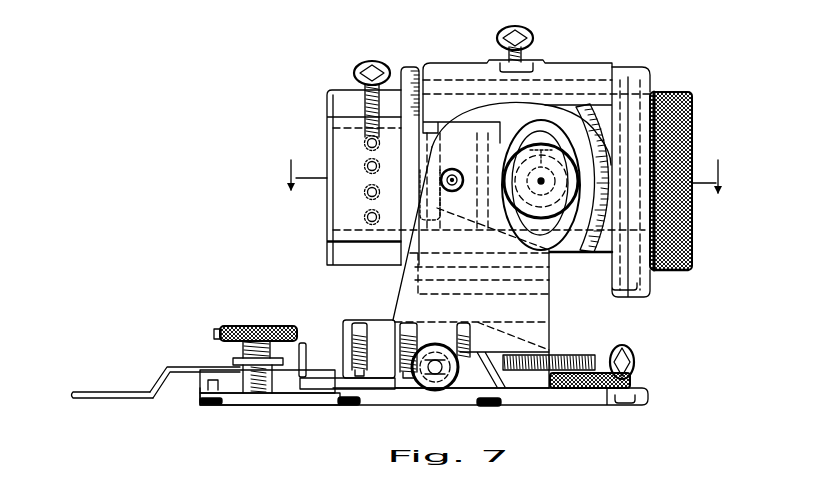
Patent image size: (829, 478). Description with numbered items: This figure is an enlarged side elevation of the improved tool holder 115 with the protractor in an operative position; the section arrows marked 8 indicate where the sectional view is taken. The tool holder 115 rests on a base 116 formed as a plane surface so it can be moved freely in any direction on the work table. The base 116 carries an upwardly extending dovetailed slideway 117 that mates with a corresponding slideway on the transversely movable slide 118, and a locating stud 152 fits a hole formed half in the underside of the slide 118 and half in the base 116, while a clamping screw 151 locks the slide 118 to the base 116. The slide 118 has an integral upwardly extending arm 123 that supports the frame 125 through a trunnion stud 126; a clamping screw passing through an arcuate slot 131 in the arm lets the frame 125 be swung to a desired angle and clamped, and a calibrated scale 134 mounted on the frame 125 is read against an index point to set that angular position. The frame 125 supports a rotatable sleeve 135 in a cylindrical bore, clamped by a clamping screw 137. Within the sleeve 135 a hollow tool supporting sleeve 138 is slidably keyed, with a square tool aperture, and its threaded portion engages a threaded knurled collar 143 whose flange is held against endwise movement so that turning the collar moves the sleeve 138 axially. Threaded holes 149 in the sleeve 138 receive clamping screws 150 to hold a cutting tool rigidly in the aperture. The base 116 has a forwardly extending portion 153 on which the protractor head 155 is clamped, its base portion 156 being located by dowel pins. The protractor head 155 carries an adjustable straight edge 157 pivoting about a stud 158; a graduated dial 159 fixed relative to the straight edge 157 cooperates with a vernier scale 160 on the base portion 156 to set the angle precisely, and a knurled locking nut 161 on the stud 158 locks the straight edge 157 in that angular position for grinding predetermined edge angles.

The section line 8- 8 is at (502, 180).
The tool holder 115 is at (390, 318).
The base 116 is at (378, 405).
The dovetailed slideway 117 is at (498, 385).
The slide 118 is at (347, 332).
The upwardly extending arm 123 is at (500, 143).
The frame 125 is at (438, 62).
The trunnion stud 126 is at (450, 168).
The arcuate slot 131 is at (528, 220).
The calibrated scale 134 is at (577, 106).
The rotatable sleeve 135 is at (407, 67).
The clamping screw 137 is at (497, 35).
The tool supporting sleeve 138 is at (691, 243).
The threaded knurled collar 143 is at (677, 272).
The threaded holes 149 is at (364, 163).
The clamping screws 150 is at (354, 71).
The clamping screw 151 is at (634, 352).
The locating stud 152 is at (550, 388).
The forwardly extending portion 153 is at (261, 405).
The protractor head 155 is at (205, 360).
The base portion 156 is at (282, 392).
The straight edge 157 is at (73, 392).
The stud 158 is at (253, 325).
The graduated dial 159 is at (303, 377).
The vernier scale 160 is at (327, 377).
The knurled locking nut 161 is at (218, 330).